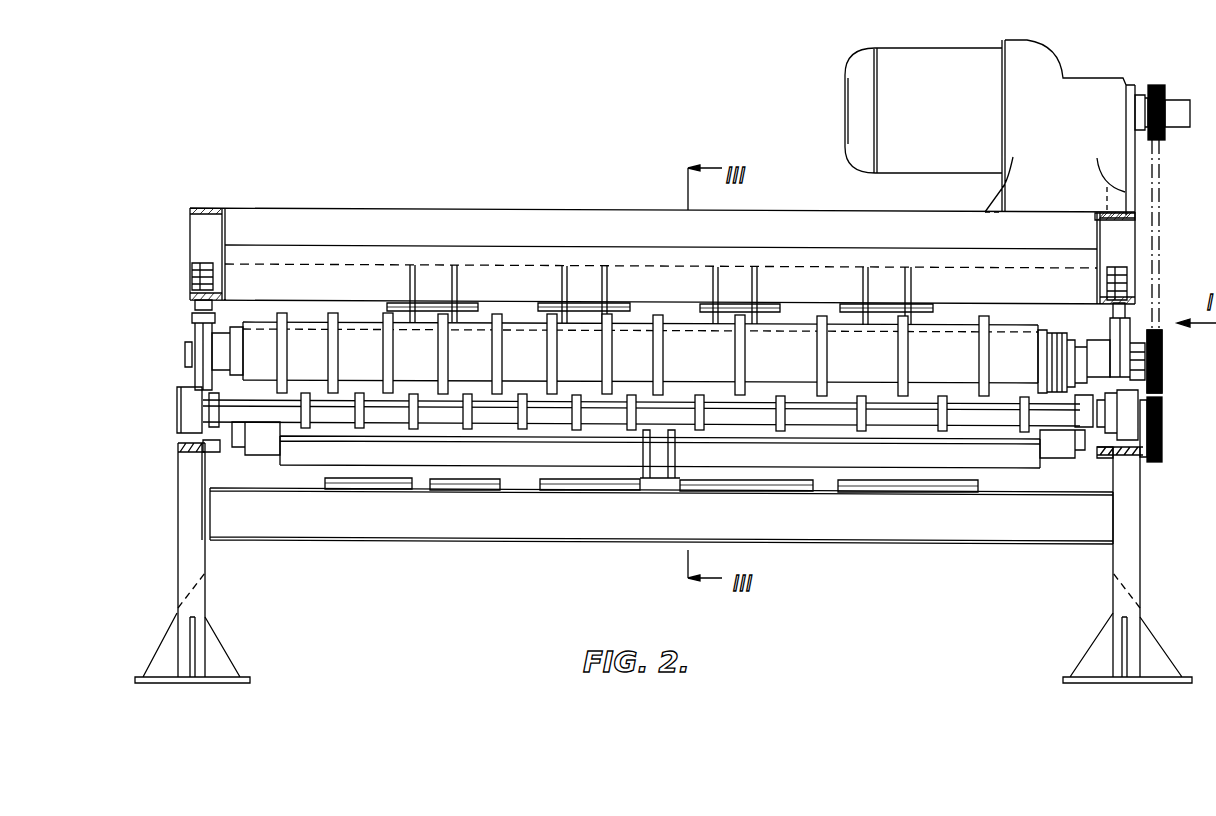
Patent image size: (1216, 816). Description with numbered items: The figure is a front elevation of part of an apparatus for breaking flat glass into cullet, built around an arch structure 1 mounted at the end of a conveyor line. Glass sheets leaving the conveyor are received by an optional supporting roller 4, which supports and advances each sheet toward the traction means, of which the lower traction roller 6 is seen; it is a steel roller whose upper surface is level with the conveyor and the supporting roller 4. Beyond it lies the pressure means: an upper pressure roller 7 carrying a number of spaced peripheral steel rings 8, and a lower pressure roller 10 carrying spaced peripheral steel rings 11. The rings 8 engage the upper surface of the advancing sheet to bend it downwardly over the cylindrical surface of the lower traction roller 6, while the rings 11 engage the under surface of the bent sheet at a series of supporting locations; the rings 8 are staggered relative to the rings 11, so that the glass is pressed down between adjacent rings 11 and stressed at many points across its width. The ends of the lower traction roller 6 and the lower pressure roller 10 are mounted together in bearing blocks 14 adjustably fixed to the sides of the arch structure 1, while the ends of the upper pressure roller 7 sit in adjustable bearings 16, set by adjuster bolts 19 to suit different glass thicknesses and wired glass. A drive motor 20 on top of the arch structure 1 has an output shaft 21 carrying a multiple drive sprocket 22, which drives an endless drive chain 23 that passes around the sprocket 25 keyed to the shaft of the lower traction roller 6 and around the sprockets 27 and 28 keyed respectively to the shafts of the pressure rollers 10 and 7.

The arch structure 1 is at (398, 228).
The supporting roller 4 is at (1062, 460).
The lower traction roller 6 is at (1015, 460).
The upper pressure roller 7 is at (678, 335).
The peripheral steel rings 8 is at (654, 338).
The lower pressure roller 10 is at (896, 416).
The peripheral steel rings 11 is at (1027, 395).
The bearing blocks 14 is at (188, 389).
The adjustable bearings 16 is at (200, 327).
The adjuster bolts 19 is at (197, 276).
The drive motor 20 is at (873, 63).
The output shaft 21 is at (1178, 103).
The multiple drive sprocket 22 is at (1167, 137).
The endless drive chain 23 is at (1159, 293).
The sprocket 25 is at (1164, 455).
The sprocket 27 is at (1163, 425).
The sprocket 28 is at (1163, 373).